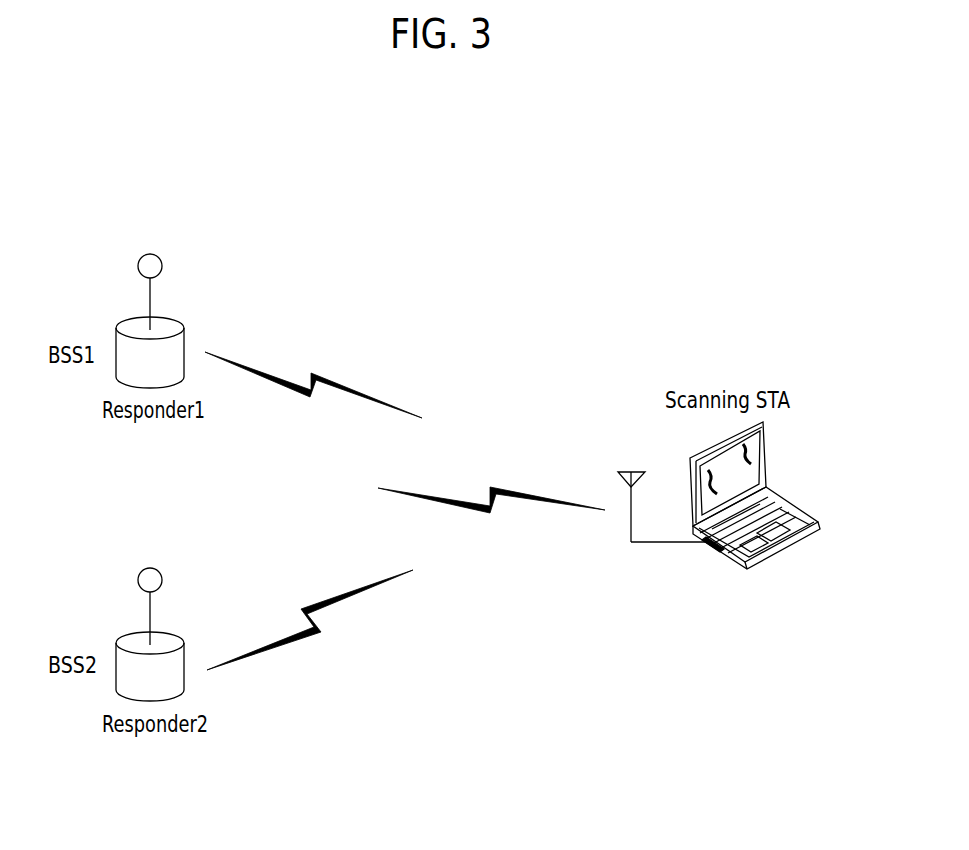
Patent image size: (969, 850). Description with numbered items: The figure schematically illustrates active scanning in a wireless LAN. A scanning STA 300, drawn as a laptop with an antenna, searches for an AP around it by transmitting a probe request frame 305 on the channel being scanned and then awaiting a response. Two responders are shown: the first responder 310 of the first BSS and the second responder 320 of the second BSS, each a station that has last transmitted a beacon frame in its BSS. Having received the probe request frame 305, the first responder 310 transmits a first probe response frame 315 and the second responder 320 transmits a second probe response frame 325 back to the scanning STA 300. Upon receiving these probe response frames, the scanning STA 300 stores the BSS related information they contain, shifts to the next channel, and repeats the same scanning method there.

The scanning STA 300 is at (767, 558).
The probe request frame 305 is at (537, 457).
The responder 1 310 is at (127, 322).
The probe response frame 1 315 is at (413, 308).
The responder 2 320 is at (125, 635).
The probe response frame 2 325 is at (438, 670).